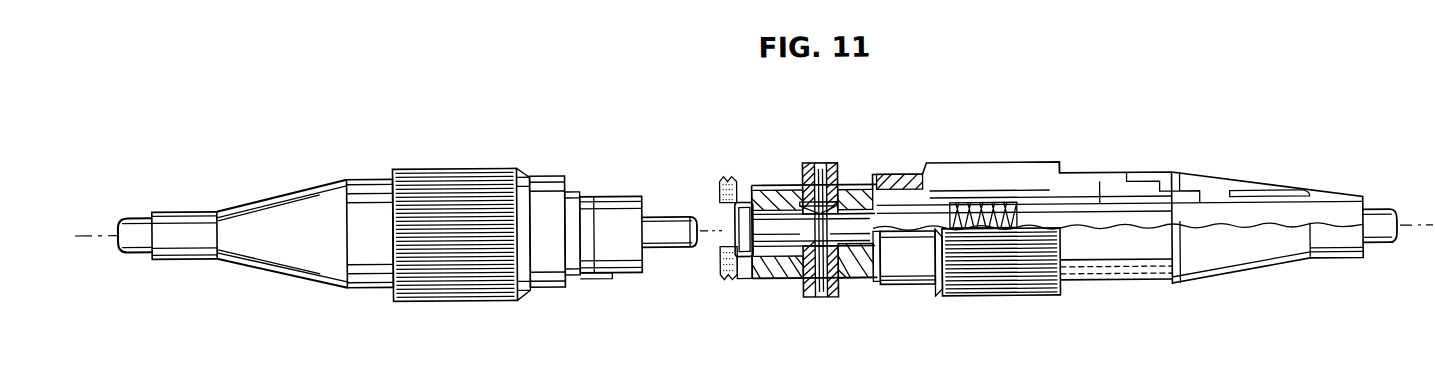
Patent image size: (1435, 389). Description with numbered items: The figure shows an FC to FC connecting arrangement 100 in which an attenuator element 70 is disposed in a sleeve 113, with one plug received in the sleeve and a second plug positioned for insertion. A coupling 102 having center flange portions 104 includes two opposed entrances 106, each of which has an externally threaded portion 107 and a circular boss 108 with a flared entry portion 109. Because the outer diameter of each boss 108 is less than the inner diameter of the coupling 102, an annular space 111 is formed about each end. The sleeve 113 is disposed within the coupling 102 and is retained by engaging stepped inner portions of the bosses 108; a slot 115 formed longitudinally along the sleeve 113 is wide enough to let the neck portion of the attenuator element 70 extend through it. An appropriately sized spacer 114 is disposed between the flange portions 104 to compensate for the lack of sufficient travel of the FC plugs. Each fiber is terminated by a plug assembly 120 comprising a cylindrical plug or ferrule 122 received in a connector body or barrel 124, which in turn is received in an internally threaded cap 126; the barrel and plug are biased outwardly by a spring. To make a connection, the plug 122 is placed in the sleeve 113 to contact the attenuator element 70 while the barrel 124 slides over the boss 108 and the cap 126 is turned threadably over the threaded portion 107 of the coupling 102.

The attenuator element 70 is at (830, 231).
The FC to FC connecting arrangement 100 is at (1025, 119).
The coupling 102 is at (857, 284).
The center flange portions 104 is at (837, 181).
The entrance 106 is at (705, 220).
The externally threaded portion 107 is at (733, 287).
The circular boss 108 is at (747, 188).
The flared entry portion 109 is at (727, 247).
The annular space 111 is at (757, 271).
The sleeve 113 is at (783, 264).
The spacer 114 is at (822, 169).
The slot 115 is at (790, 203).
The plug assembly 120 is at (584, 147).
The plug 122 is at (667, 255).
The barrel 124 is at (627, 280).
The cap 126 is at (517, 174).